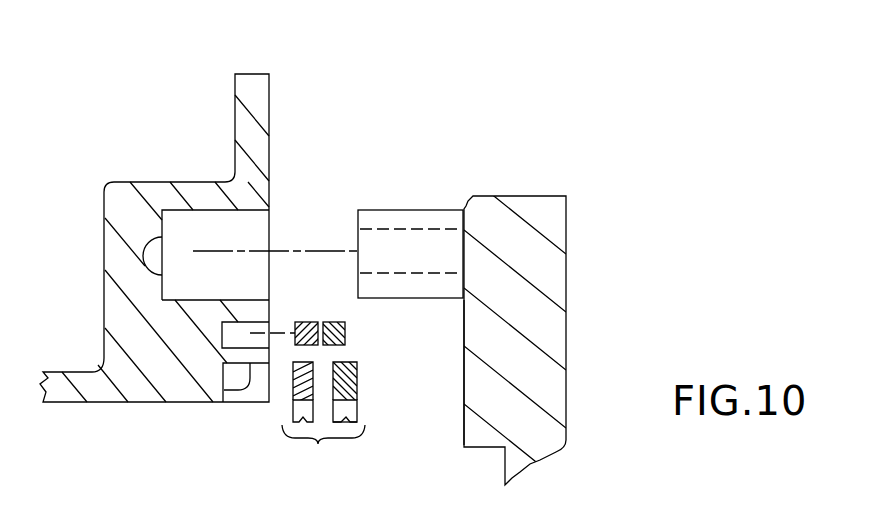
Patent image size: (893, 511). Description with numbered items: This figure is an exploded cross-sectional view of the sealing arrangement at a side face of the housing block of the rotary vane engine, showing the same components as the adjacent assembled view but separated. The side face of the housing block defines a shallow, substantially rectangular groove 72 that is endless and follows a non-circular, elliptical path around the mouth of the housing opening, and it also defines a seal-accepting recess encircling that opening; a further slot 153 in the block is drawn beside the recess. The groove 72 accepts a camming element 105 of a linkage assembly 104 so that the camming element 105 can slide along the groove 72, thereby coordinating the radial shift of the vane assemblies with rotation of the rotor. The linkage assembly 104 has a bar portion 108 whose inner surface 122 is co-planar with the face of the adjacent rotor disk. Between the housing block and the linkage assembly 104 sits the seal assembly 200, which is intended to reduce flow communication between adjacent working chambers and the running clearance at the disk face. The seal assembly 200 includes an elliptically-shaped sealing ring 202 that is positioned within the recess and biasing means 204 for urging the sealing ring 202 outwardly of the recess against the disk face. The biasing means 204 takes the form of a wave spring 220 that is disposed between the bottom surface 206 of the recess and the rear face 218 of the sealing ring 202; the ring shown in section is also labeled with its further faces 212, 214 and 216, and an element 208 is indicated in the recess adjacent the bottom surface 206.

The groove 72 is at (232, 216).
The camming element 105 is at (400, 209).
The linkage assembly 104 is at (525, 197).
The inner surface of the bar portion 122 is at (460, 324).
The groove 153 is at (232, 321).
The magnet 216 is at (357, 367).
The sensor element 212 is at (348, 362).
The rear face of the sealing ring 218 is at (357, 400).
The circuit element 214 is at (320, 405).
The bottom surface of the recess 206 is at (230, 378).
The seal 208 is at (226, 392).
The wave spring 220 is at (293, 412).
The sealing ring 202 is at (360, 422).
The biasing means 204 is at (267, 430).
The seal assembly 200 is at (323, 399).
The bar portion 108 is at (525, 417).